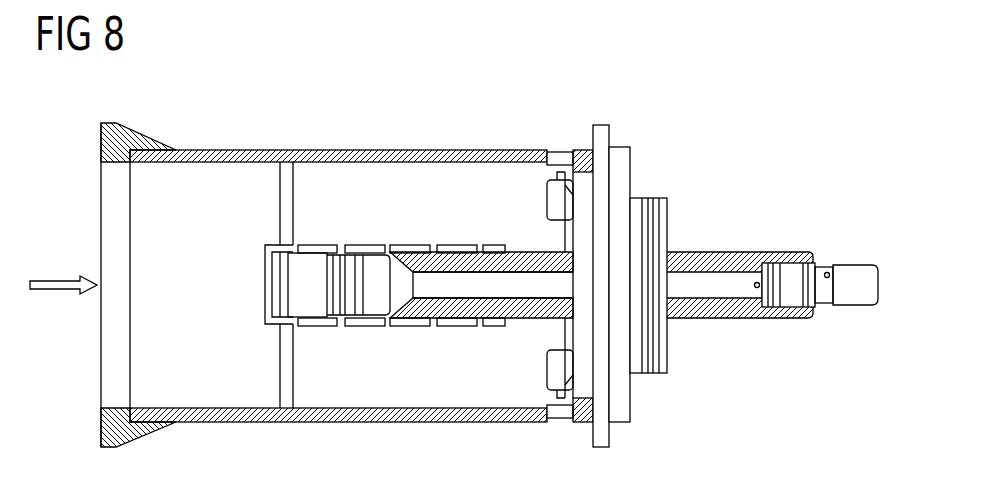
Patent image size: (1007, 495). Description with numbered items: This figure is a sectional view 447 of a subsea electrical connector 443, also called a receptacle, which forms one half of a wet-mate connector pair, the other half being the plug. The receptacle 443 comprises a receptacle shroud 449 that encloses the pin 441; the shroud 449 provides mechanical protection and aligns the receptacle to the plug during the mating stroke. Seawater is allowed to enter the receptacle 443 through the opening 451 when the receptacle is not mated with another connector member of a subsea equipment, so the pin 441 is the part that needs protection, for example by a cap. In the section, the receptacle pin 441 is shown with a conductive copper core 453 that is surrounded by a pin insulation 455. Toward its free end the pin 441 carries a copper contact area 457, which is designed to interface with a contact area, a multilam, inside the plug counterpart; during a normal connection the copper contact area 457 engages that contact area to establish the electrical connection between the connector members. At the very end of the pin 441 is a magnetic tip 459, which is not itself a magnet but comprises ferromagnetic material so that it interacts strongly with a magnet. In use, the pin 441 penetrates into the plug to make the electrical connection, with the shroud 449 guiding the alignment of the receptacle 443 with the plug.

The pin 441 is at (432, 248).
The subsea electrical connector 443 is at (76, 183).
The sectional view 447 is at (758, 178).
The receptacle shroud 449 is at (229, 149).
The opening 451 is at (56, 280).
The copper core 453 is at (428, 288).
The pin insulation 455 is at (463, 324).
The copper contact area 457 is at (309, 263).
The magnetic tip 459 is at (276, 284).